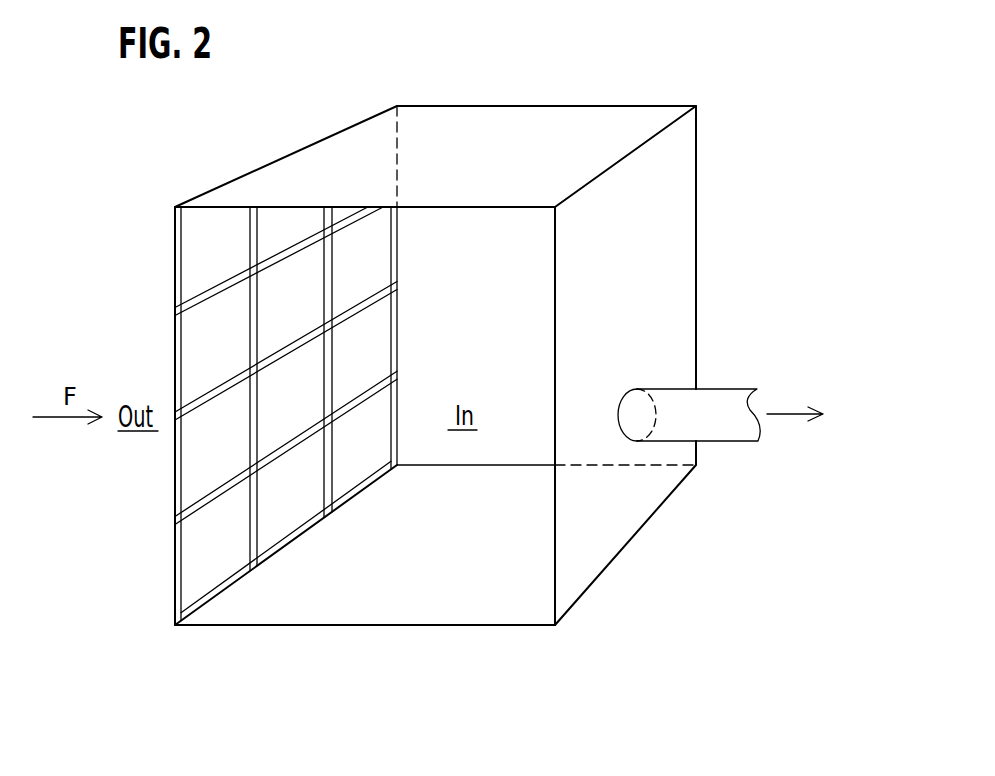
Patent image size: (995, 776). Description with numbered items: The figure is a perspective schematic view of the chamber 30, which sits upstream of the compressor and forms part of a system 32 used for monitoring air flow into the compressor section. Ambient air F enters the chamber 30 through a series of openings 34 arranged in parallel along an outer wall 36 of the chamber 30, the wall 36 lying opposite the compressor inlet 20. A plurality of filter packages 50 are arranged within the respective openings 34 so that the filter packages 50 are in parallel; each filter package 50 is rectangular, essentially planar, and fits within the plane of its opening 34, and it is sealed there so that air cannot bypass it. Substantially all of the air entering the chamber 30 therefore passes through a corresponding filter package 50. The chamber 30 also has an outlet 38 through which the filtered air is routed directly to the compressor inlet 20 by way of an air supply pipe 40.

The compressor inlet 20 is at (788, 414).
The chamber 30 is at (553, 67).
The system 32 is at (373, 662).
The opening 34 is at (177, 347).
The outer wall 36 is at (175, 262).
The outlet 38 is at (637, 402).
The air supply pipe 40 is at (728, 418).
The filter package 50 is at (228, 356).